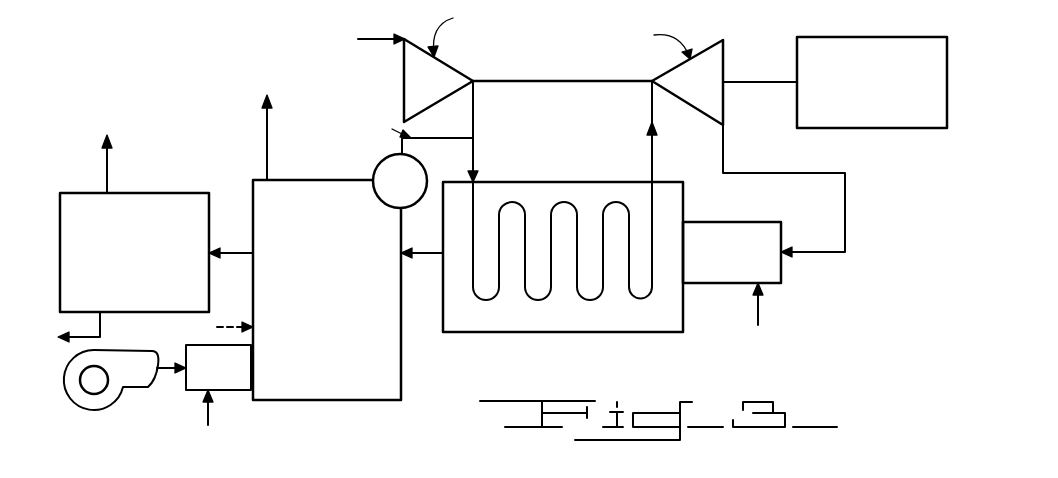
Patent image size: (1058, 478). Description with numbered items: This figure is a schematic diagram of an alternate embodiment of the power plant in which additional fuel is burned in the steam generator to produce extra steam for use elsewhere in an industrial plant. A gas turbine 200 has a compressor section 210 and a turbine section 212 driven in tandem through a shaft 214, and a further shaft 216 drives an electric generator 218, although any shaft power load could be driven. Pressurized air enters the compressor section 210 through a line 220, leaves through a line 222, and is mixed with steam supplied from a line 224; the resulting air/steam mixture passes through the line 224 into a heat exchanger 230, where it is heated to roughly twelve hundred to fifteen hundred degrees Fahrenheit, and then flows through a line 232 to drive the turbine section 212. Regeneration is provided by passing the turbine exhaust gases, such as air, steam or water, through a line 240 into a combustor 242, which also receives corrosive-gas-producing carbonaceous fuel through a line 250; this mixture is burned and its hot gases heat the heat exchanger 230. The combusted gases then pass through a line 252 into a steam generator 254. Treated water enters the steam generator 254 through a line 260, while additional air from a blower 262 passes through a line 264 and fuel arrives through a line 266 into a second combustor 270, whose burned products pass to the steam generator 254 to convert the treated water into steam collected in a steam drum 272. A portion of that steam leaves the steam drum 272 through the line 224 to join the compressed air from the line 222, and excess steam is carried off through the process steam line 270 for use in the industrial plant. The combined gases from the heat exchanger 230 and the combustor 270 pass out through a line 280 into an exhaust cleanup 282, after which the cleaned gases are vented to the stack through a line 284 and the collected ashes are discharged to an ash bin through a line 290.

The gas turbine 200 is at (557, 70).
The compressor section 210 is at (447, 64).
The turbine section 212 is at (699, 52).
The shaft 214 is at (565, 86).
The shaft 216 is at (748, 84).
The electric generator 218 is at (838, 37).
The line 220 is at (368, 38).
The line 222 is at (476, 118).
The line 224 is at (418, 138).
The heat exchanger 230 is at (563, 182).
The line 232 is at (656, 165).
The line 240 is at (757, 173).
The combustor 242 is at (735, 222).
The line 250 is at (760, 309).
The line 252 is at (430, 257).
The steam generator 254 is at (361, 403).
The line 260 is at (223, 326).
The blower 262 is at (68, 392).
The line 264 is at (172, 375).
The line 266 is at (205, 422).
The combustor 270 is at (265, 150).
The steam drum 272 is at (425, 174).
The line 280 is at (232, 252).
The exhaust cleanup 282 is at (96, 193).
The line 284 is at (109, 176).
The line 290 is at (97, 335).